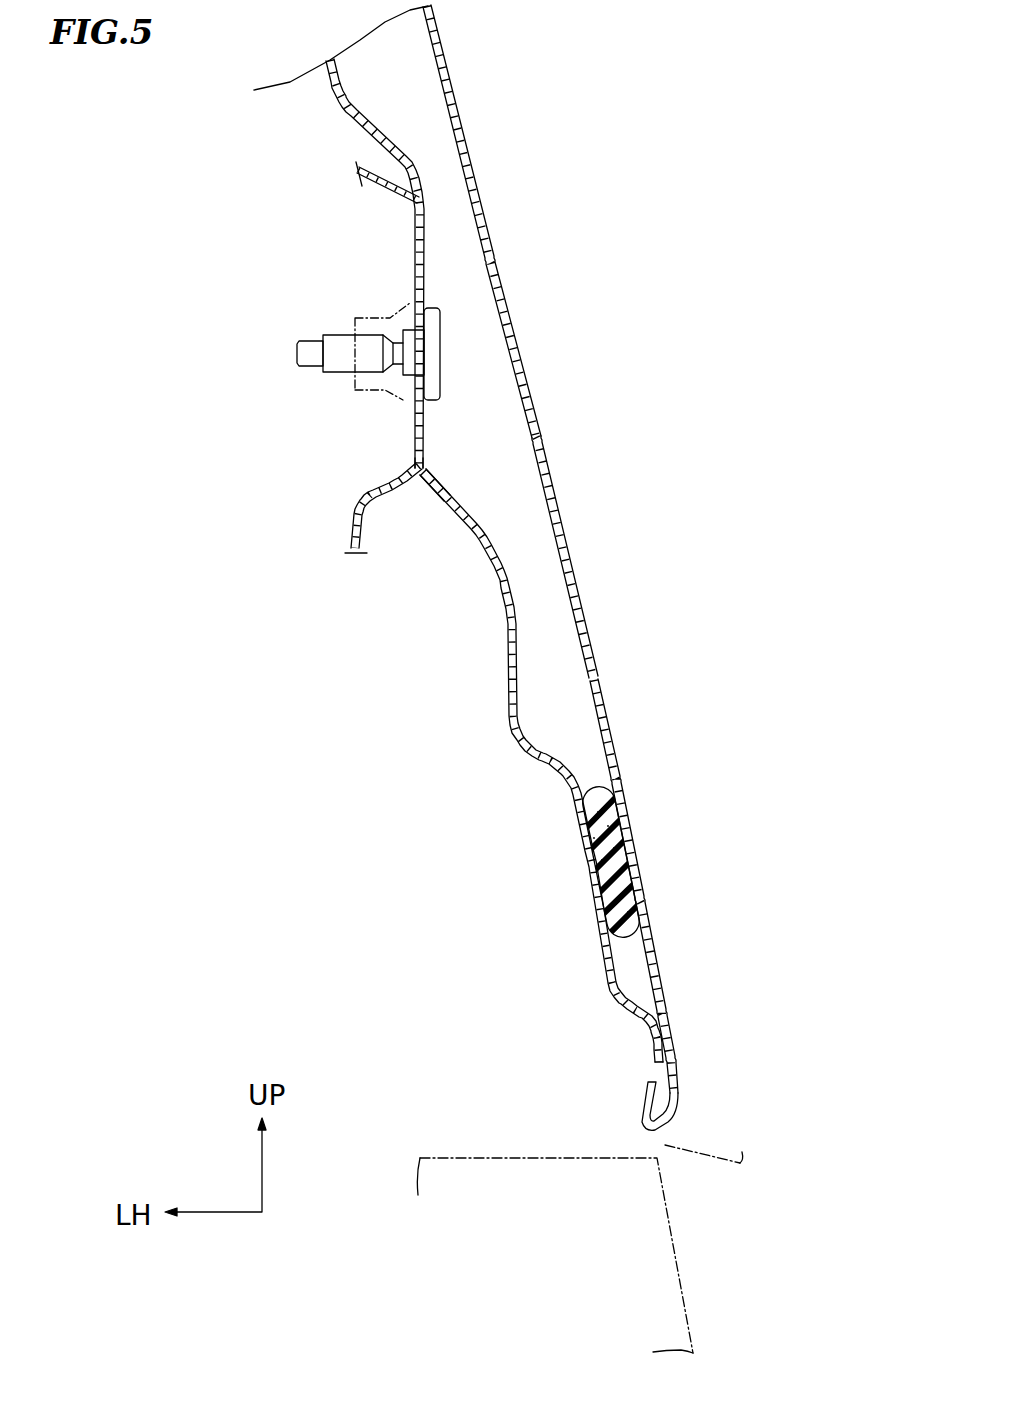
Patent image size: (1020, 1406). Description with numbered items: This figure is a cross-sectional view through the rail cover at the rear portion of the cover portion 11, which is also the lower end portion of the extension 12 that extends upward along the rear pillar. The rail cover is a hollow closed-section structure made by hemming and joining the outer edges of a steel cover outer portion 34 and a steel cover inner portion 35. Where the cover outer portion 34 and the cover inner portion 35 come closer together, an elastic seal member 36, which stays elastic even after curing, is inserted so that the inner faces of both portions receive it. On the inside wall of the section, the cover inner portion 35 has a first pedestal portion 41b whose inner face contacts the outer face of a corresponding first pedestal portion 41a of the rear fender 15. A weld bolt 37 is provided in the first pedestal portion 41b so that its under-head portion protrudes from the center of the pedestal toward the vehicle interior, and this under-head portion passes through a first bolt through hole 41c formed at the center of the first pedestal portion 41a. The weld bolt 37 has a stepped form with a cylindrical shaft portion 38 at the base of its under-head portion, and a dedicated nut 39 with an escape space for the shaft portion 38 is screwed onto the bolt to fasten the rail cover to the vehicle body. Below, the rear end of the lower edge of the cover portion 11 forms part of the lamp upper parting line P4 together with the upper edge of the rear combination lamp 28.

The cover portion 11 is at (601, 707).
The extension 12 is at (460, 117).
The rear fender 15 is at (368, 541).
The rear combination lamp 28 is at (683, 1273).
The cover outer portion 34 is at (585, 555).
The cover inner portion 35 is at (505, 590).
The elastic seal member 36 is at (633, 872).
The weld bolt 37 is at (320, 338).
The shaft portion 38 is at (405, 378).
The dedicated nut 39 is at (350, 385).
The first pedestal portion 41a is at (392, 490).
The first pedestal portion 41b is at (432, 490).
The first bolt through hole 41c is at (408, 338).
The lamp upper parting line P4 is at (745, 1158).